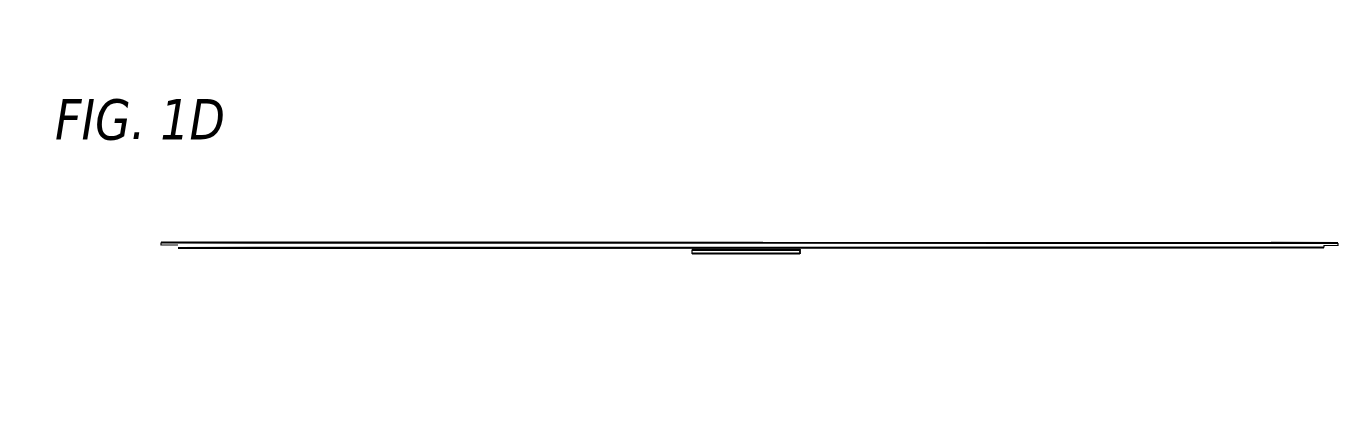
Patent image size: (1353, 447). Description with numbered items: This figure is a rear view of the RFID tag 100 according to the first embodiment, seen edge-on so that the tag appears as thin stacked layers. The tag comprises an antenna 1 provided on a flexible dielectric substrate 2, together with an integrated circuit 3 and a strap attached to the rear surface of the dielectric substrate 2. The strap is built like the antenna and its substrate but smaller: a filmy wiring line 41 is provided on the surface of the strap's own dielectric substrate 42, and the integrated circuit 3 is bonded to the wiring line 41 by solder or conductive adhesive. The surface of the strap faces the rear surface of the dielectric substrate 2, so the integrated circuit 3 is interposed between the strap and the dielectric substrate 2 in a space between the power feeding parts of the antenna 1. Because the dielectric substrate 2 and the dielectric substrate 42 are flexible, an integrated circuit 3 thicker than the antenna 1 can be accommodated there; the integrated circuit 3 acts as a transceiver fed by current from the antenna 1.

The RFID tag 100 is at (1122, 231).
The antenna 1 is at (1188, 250).
The dielectric substrate 2 is at (1220, 242).
The integrated circuit 3 is at (750, 241).
The wiring line 41 is at (800, 251).
The dielectric substrate 42 is at (804, 254).